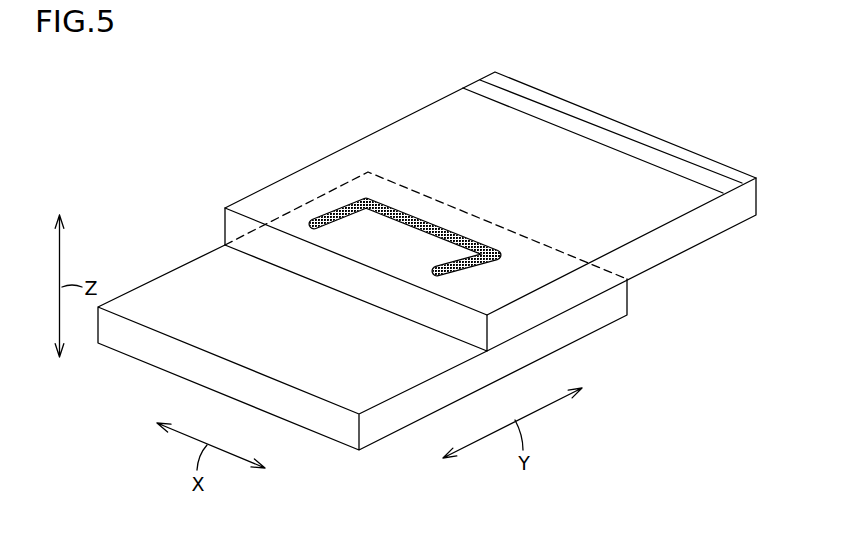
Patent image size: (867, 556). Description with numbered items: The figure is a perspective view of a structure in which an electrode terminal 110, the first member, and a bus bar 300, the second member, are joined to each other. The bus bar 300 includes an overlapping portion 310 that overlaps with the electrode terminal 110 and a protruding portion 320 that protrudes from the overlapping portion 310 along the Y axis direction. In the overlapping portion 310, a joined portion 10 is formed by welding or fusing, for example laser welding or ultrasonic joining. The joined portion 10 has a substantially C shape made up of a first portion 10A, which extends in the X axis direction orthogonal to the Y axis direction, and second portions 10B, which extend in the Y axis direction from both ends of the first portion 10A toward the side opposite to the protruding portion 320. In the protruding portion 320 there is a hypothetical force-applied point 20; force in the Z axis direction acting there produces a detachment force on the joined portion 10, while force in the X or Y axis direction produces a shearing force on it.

The joined portion 10 is at (366, 148).
The first portion 10A is at (400, 209).
The second portions 10B is at (428, 60).
The force-applied point 20 is at (592, 130).
The electrode terminal 110 is at (172, 287).
The bus bar 300 is at (494, 226).
The overlapping portion 310 is at (523, 267).
The protruding portion 320 is at (647, 212).